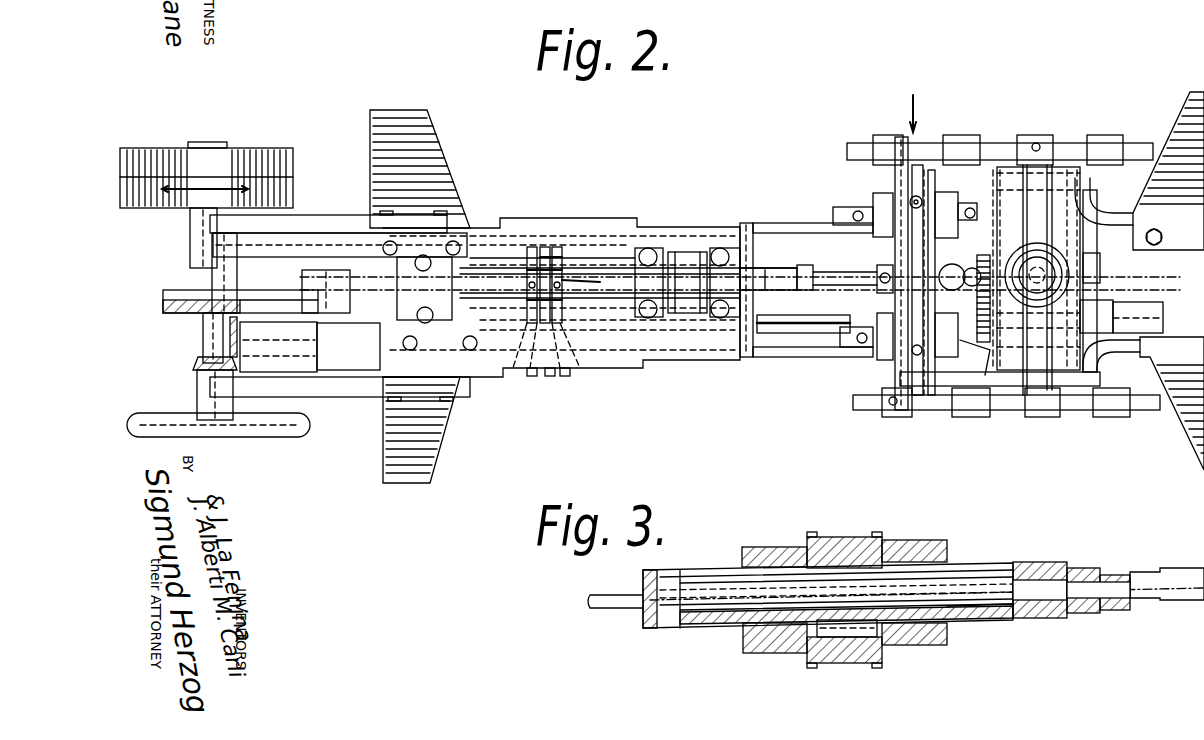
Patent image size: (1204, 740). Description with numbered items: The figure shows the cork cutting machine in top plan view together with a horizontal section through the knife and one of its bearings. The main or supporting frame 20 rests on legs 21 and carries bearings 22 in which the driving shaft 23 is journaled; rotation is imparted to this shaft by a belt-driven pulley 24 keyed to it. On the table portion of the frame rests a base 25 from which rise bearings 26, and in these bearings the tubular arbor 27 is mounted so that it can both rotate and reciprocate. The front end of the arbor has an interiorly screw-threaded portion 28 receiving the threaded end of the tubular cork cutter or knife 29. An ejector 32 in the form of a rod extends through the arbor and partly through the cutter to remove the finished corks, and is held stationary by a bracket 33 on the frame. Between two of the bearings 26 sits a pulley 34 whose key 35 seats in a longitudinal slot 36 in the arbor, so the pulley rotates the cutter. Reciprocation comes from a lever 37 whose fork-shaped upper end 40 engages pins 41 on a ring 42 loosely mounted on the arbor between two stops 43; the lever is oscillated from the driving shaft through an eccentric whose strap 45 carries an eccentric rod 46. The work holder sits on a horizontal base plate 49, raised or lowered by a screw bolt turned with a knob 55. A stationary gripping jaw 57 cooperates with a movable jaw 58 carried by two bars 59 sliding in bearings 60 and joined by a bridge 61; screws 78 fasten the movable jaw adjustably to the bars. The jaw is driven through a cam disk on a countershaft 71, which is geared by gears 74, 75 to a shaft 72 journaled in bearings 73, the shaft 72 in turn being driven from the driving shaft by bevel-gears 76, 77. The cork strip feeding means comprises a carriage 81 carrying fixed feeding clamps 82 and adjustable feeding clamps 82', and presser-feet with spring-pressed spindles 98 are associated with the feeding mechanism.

In FIG. 2, the main or supporting frame 20 is at (770, 223).
In FIG. 2, the legs 21 is at (442, 182).
In FIG. 2, the bearings 22 is at (190, 238).
In FIG. 2, the driving shaft 23 is at (208, 328).
In FIG. 2, the pulley 24 is at (294, 183).
In FIG. 2, the base 25 is at (690, 356).
In FIG. 2, the bearings 26 is at (462, 232).
In FIG. 3, the bearings 26 is at (775, 547).
In FIG. 2, the tubular arbor 27 is at (789, 267).
In FIG. 3, the tubular arbor 27 is at (700, 572).
In FIG. 3, the interiorly screw-threaded portion 28 is at (1045, 562).
In FIG. 2, the tubular cork cutter or knife 29 is at (845, 271).
In FIG. 3, the tubular cork cutter or knife 29 is at (1192, 572).
In FIG. 2, the ejector 32 is at (300, 288).
In FIG. 3, the ejector 32 is at (1108, 575).
In FIG. 2, the bracket 33 is at (213, 283).
In FIG. 2, the pulley 34 is at (690, 252).
In FIG. 3, the pulley 34 is at (845, 537).
In FIG. 3, the key 35 is at (846, 632).
In FIG. 3, the longitudinal slot 36 is at (968, 622).
In FIG. 2, the lever 37 is at (560, 255).
In FIG. 2, the fork-shaped upper end 40 is at (540, 247).
In FIG. 2, the pins 41 is at (545, 247).
In FIG. 2, the ring 42 is at (566, 268).
In FIG. 2, the stops 43 is at (528, 258).
In FIG. 2, the strap 45 is at (165, 312).
In FIG. 2, the eccentric rod 46 is at (340, 245).
In FIG. 2, the horizontal base plate 49 is at (1060, 165).
In FIG. 2, the knob 55 is at (1062, 252).
In FIG. 2, the stationary gripping jaw 57 is at (936, 395).
In FIG. 2, the movable jaw 58 is at (895, 377).
In FIG. 2, the bars 59 is at (1150, 142).
In FIG. 2, the bearings 60 is at (1105, 135).
In FIG. 2, the bridge 61 is at (1030, 135).
In FIG. 2, the countershaft 71 is at (1100, 270).
In FIG. 2, the shaft 72 is at (350, 338).
In FIG. 2, the bearings 73 is at (1140, 302).
In FIG. 2, the gear 74 is at (980, 254).
In FIG. 2, the gear 75 is at (986, 376).
In FIG. 2, the bevel-gear 76 is at (230, 344).
In FIG. 2, the bevel-gear 77 is at (198, 362).
In FIG. 2, the screws 78 is at (893, 407).
In FIG. 2, the carriage 81 is at (836, 207).
In FIG. 2, the feeding clamps 82 is at (958, 265).
In FIG. 2, the adjustable feeding clamps 82' is at (872, 266).
In FIG. 2, the spring-pressed spindle 98 is at (918, 197).